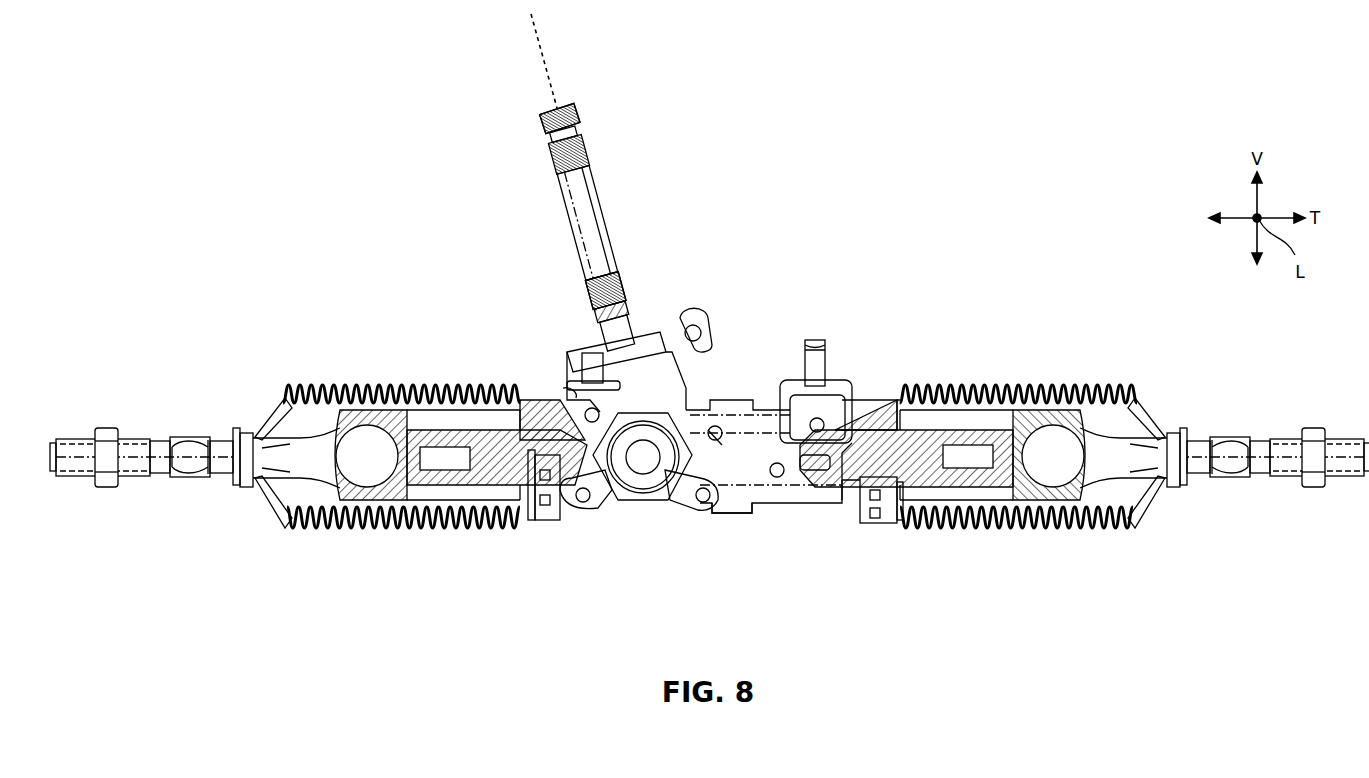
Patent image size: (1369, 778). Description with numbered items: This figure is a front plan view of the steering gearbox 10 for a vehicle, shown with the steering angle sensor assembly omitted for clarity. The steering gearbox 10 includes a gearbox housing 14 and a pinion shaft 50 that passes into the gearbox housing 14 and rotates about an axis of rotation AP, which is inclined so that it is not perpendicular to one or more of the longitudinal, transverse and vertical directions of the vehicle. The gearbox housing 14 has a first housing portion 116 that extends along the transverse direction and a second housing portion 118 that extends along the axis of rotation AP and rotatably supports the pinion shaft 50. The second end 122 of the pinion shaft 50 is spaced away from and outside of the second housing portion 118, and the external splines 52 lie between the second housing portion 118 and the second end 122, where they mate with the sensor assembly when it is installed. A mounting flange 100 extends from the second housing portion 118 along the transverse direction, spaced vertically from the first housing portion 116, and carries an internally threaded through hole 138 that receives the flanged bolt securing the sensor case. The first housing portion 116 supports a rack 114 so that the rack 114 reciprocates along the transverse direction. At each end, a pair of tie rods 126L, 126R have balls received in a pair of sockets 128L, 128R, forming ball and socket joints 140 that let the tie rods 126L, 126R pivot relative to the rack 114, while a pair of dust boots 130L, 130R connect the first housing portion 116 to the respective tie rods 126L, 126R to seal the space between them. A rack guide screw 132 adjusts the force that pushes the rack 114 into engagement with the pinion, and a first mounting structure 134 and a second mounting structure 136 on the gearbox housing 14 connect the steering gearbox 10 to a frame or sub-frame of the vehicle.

The steering gearbox 10 is at (227, 347).
The gearbox housing 14 is at (636, 504).
The pinion shaft 50 is at (605, 222).
The external splines 52 is at (623, 290).
The mounting flange 100 is at (705, 315).
The rack 114 is at (935, 398).
The first housing portion 116 is at (732, 515).
The second housing portion 118 is at (662, 332).
The second end 122 is at (578, 112).
The tie rod 126R is at (138, 478).
The tie rod 126L is at (1220, 475).
The socket 128R is at (455, 520).
The socket 128L is at (985, 515).
The dust boot 130R is at (385, 390).
The dust boot 130L is at (1028, 385).
The rack guide screw 132 is at (640, 500).
The first mounting structure 134 is at (833, 375).
The second mounting structure 136 is at (565, 390).
The through hole 138 is at (711, 338).
The ball joint 140 is at (376, 500).
The axis of rotation AP is at (548, 62).